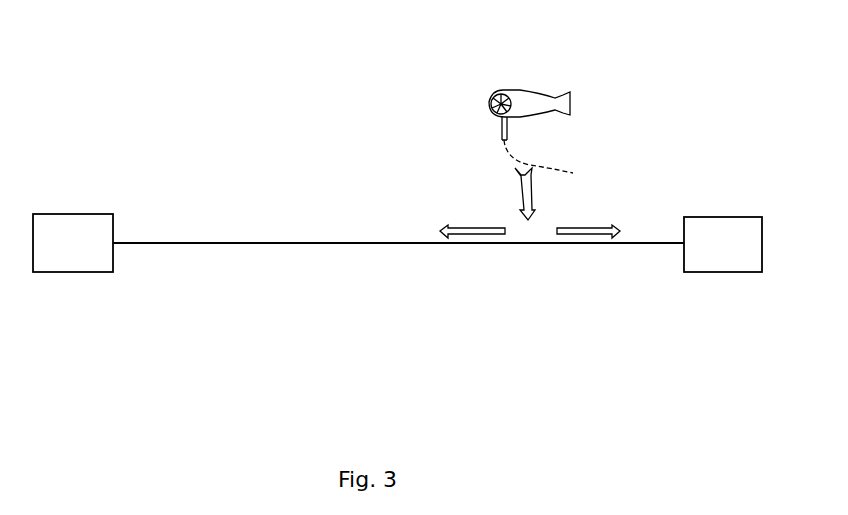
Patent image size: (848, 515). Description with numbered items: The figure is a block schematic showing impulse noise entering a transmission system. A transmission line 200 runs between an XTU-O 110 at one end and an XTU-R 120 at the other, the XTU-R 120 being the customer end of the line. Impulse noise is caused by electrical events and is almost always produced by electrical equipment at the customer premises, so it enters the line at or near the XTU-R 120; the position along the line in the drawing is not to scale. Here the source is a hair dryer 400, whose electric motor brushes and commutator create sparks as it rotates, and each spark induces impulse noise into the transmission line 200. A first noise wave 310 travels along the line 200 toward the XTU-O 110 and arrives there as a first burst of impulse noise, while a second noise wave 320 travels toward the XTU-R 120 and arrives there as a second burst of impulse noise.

The XTU-O 110 is at (72, 272).
The XTU-R 120 is at (723, 272).
The transmission line 200 is at (365, 244).
The first noise wave 310 is at (477, 229).
The second noise wave 320 is at (585, 229).
The hair dryer 400 is at (503, 90).